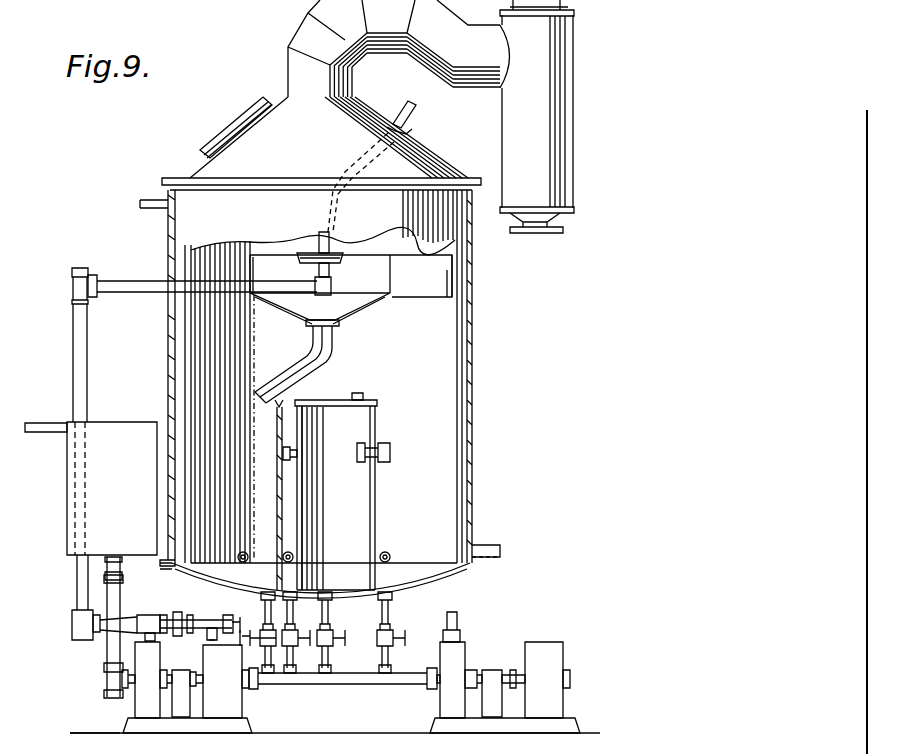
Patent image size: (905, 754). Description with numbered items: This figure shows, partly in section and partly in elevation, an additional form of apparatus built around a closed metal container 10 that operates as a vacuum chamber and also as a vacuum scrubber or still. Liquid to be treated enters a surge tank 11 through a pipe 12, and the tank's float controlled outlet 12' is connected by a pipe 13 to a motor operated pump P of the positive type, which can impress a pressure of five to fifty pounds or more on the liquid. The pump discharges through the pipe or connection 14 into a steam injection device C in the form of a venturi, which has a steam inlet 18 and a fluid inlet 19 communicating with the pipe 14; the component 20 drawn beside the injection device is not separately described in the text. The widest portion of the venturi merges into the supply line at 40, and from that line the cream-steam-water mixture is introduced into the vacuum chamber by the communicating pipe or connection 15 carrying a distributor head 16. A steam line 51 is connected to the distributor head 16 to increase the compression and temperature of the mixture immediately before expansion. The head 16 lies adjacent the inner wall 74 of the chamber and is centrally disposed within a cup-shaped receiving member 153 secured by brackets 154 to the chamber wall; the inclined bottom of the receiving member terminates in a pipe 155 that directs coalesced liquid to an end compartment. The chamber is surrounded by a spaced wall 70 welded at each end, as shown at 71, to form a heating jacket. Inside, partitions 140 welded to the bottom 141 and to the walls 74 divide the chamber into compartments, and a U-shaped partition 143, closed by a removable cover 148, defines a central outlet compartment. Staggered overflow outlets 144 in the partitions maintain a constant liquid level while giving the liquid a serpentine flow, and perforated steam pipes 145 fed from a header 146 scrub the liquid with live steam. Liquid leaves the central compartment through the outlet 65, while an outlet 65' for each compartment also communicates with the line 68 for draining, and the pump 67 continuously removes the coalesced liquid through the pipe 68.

The vacuum chamber 10 is at (433, 493).
The spaced wall 70 is at (470, 447).
The inner wall 74 is at (458, 417).
The steam line 51 is at (325, 210).
The distributor head 16 is at (336, 250).
The communicating pipe 15 is at (330, 290).
The brackets 154 is at (427, 277).
The receiving member 153 is at (377, 305).
The pipe 155 is at (283, 372).
The removable cover 148 is at (347, 382).
The U-shaped partition 143 is at (378, 427).
The partitions 140 is at (282, 507).
The overflow outlets 144 is at (283, 450).
The perforated steam pipe 145 is at (255, 537).
The bottom 141 is at (443, 577).
The welded connection 71 is at (478, 568).
The outlet 65' is at (322, 632).
The outlet pipe 65 is at (317, 632).
The pipe 68 is at (367, 677).
The pump 67 is at (458, 657).
The motor operated pump P is at (143, 693).
The pipe 13 is at (140, 294).
The surge tank 11 is at (85, 393).
The pipe 12 is at (44, 414).
The float controlled outlet 12' is at (120, 556).
The venturi connection 40 is at (82, 623).
The pipe 14 is at (143, 640).
The steam injection device C is at (155, 627).
The shaft 20 is at (153, 630).
The steam inlet 18 is at (210, 632).
The fluid inlet 19 is at (210, 640).
The header 146 is at (72, 743).